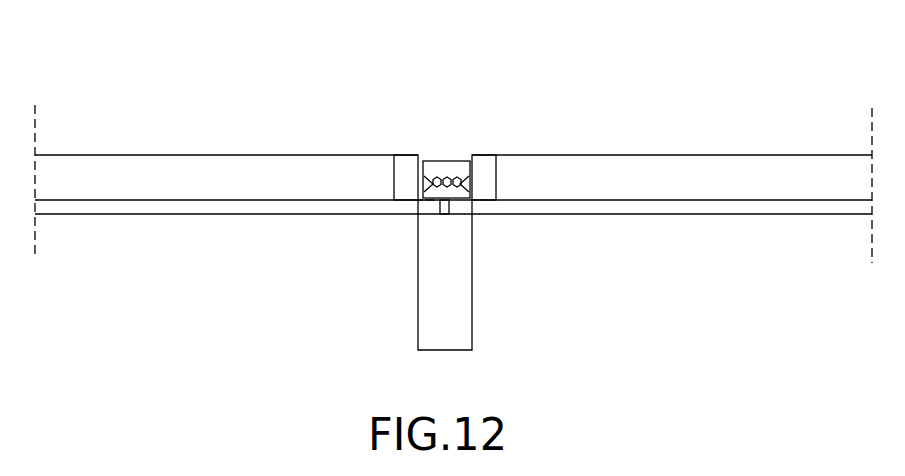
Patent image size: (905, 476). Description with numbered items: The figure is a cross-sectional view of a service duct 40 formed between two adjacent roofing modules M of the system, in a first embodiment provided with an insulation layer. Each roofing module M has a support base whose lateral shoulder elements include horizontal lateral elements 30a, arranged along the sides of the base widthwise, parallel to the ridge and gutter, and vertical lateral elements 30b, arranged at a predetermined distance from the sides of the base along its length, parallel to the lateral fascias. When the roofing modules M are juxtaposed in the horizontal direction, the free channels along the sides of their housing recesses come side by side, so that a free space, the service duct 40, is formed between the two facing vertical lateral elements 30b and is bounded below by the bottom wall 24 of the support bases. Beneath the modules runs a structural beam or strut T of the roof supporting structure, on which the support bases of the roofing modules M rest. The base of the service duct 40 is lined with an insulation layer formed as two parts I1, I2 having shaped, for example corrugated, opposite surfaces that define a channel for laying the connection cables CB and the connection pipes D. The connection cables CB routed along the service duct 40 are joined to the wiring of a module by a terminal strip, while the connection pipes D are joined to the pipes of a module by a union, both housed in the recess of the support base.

The roofing module M is at (137, 150).
The horizontal lateral element 30a is at (260, 170).
The vertical lateral element 30b is at (410, 157).
The bottom wall 24 is at (245, 207).
The service duct 40 is at (450, 146).
The insulation layer part I2 is at (433, 170).
The connection pipes D is at (465, 210).
The structural beam T is at (458, 309).
The connection cables CB is at (418, 200).
The insulation layer part I1 is at (430, 200).